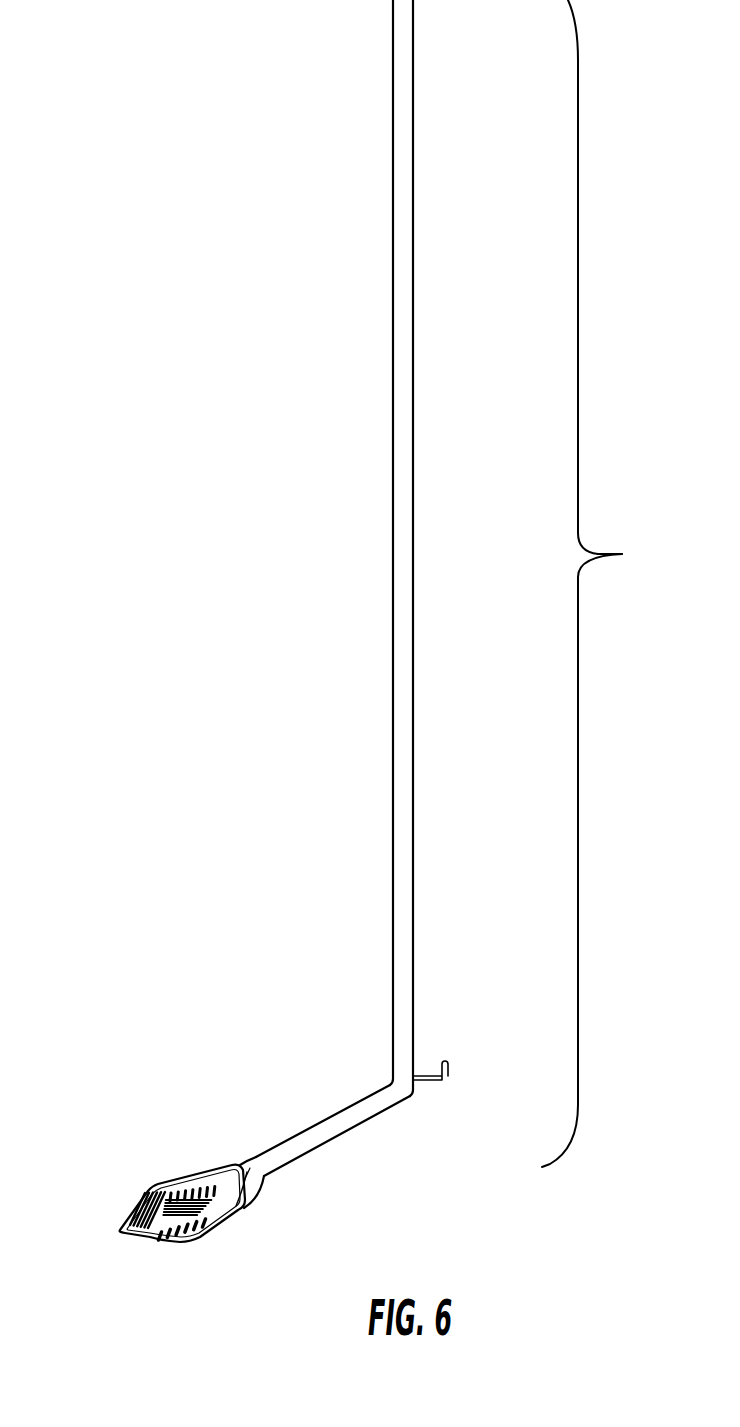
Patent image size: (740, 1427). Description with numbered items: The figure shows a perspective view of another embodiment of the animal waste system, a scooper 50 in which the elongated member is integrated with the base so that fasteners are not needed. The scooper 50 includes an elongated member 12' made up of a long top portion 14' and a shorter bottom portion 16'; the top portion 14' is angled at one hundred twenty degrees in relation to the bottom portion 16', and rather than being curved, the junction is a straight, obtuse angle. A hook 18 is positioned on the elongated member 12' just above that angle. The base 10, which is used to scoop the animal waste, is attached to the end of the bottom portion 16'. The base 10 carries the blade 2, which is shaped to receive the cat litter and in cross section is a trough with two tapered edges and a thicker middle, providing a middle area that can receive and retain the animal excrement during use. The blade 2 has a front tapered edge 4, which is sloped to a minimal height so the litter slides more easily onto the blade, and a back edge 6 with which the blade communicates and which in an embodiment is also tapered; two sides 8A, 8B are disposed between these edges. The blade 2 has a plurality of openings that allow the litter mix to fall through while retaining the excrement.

The blade 2 is at (167, 1198).
The front tapered edge 4 is at (130, 1207).
The back edge 6 is at (240, 1194).
The side 8A is at (195, 1237).
The side 8B is at (198, 1170).
The base 10 is at (108, 1168).
The elongated member 12' is at (602, 583).
The top portion 14' is at (340, 548).
The bottom portion 16' is at (333, 1067).
The hook 18 is at (448, 1073).
The scooper 50 is at (638, 1183).